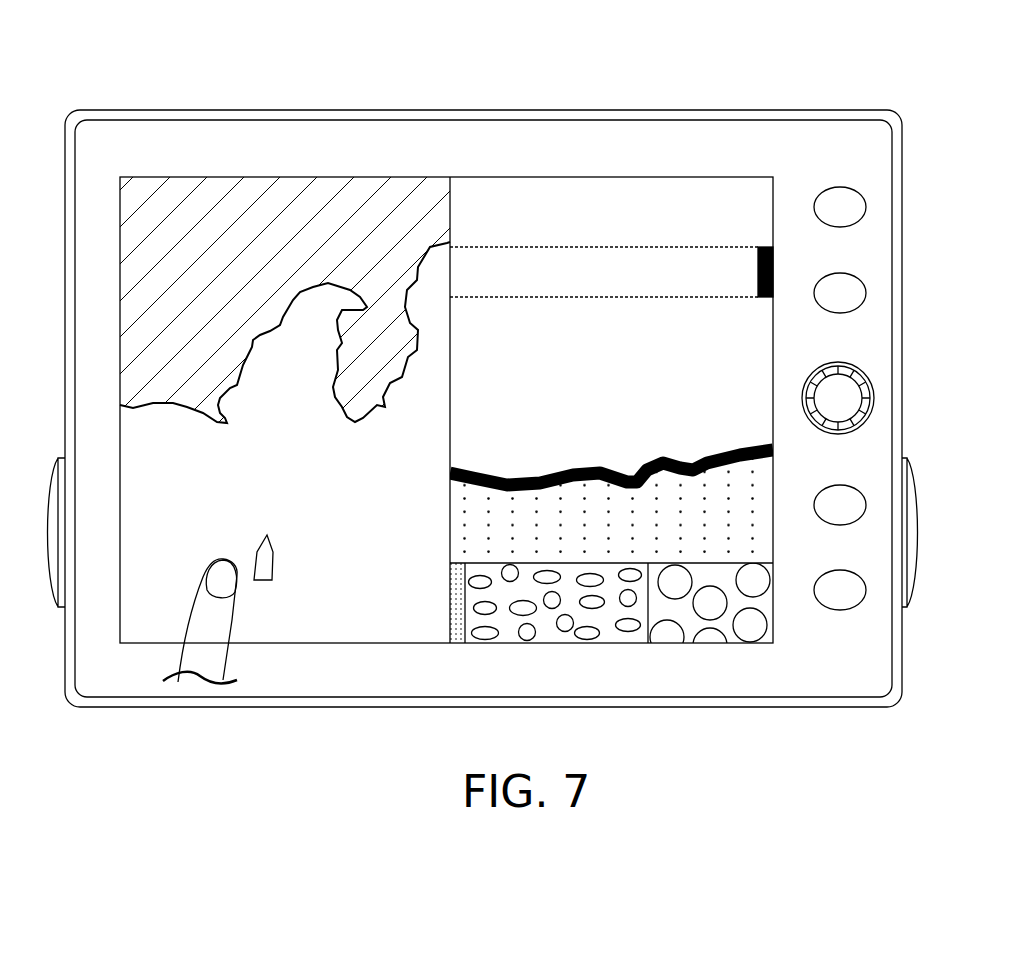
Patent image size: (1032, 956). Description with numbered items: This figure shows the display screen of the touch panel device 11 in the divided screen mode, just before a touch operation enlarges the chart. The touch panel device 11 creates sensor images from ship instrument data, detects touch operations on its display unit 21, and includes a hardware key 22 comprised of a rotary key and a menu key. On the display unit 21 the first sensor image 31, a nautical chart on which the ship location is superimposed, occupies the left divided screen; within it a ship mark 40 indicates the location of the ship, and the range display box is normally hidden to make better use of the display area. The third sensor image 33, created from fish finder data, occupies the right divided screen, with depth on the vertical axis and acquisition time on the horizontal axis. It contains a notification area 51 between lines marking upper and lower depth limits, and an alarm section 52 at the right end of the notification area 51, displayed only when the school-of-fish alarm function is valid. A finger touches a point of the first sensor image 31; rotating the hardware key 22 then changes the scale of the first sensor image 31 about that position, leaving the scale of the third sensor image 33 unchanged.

The touch panel device 11 is at (972, 140).
The display unit 21 is at (790, 172).
The hardware key 22 is at (880, 370).
The first sensor image 31 is at (124, 213).
The third sensor image 33 is at (597, 174).
The ship mark 40 is at (272, 560).
The notification area 51 is at (490, 299).
The alarm section 52 is at (765, 299).